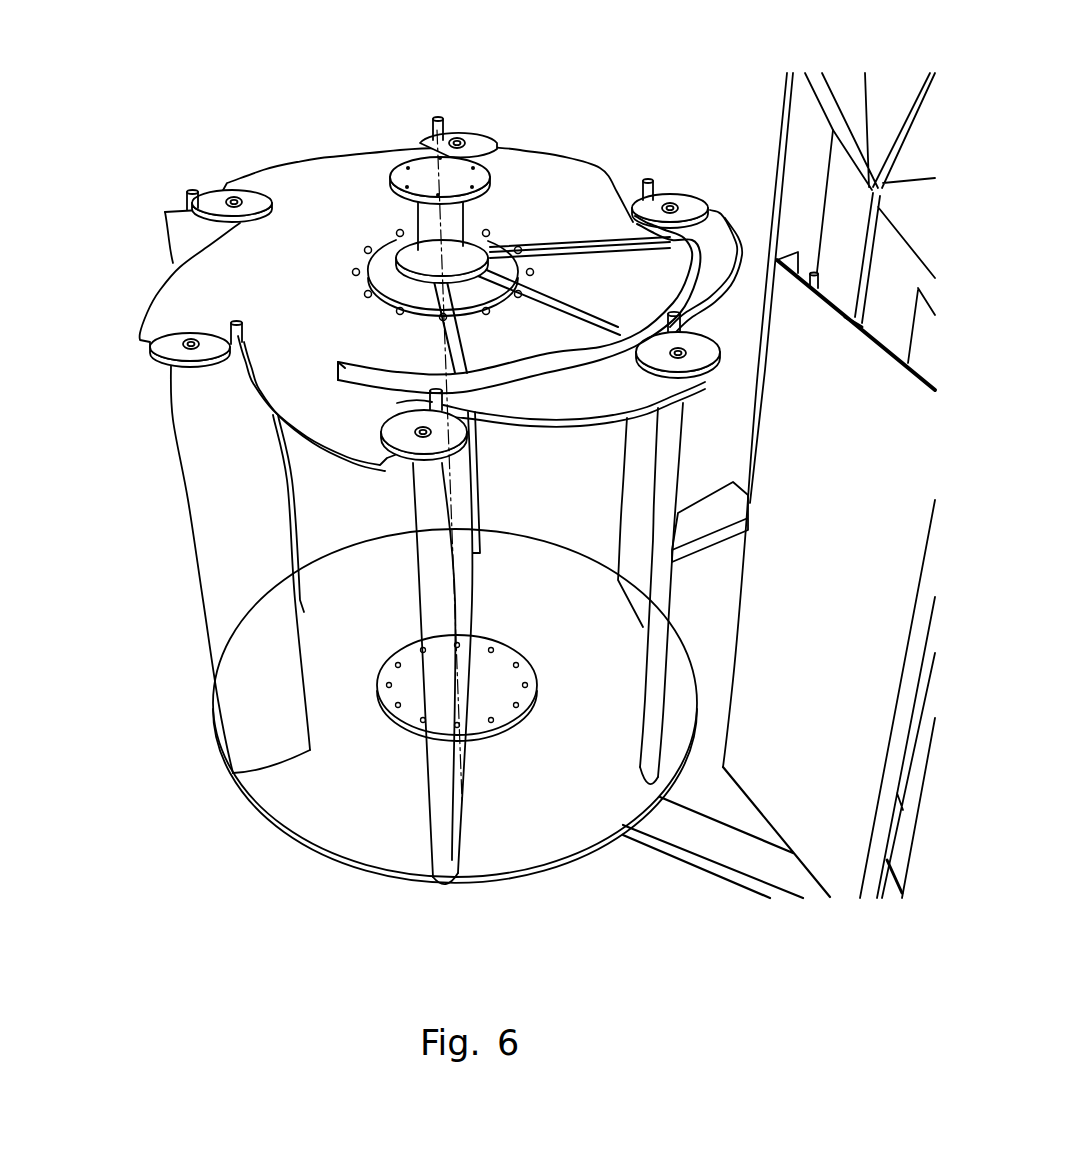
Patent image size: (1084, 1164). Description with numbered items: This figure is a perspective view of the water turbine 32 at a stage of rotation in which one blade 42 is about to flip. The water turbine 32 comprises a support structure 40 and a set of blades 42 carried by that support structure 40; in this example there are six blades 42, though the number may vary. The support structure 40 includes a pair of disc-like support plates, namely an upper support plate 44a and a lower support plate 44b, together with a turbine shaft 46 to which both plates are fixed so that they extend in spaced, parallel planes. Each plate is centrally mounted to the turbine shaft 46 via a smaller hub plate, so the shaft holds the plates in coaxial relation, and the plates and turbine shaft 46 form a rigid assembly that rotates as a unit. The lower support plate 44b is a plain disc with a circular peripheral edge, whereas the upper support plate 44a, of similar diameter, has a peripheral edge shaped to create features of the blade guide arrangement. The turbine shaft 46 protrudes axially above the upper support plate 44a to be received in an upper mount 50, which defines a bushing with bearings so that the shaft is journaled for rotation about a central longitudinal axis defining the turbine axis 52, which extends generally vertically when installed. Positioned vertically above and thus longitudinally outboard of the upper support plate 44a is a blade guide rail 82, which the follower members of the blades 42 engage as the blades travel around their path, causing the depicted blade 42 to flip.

The water turbine 32 is at (140, 122).
The support structure 40 is at (333, 783).
The blade 42 is at (242, 677).
The upper support plate 44a is at (341, 248).
The lower support plate 44b is at (622, 685).
The turbine shaft 46 is at (466, 652).
The upper mount 50 is at (373, 177).
The turbine axis 52 is at (442, 170).
The blade guide rail 82 is at (702, 235).